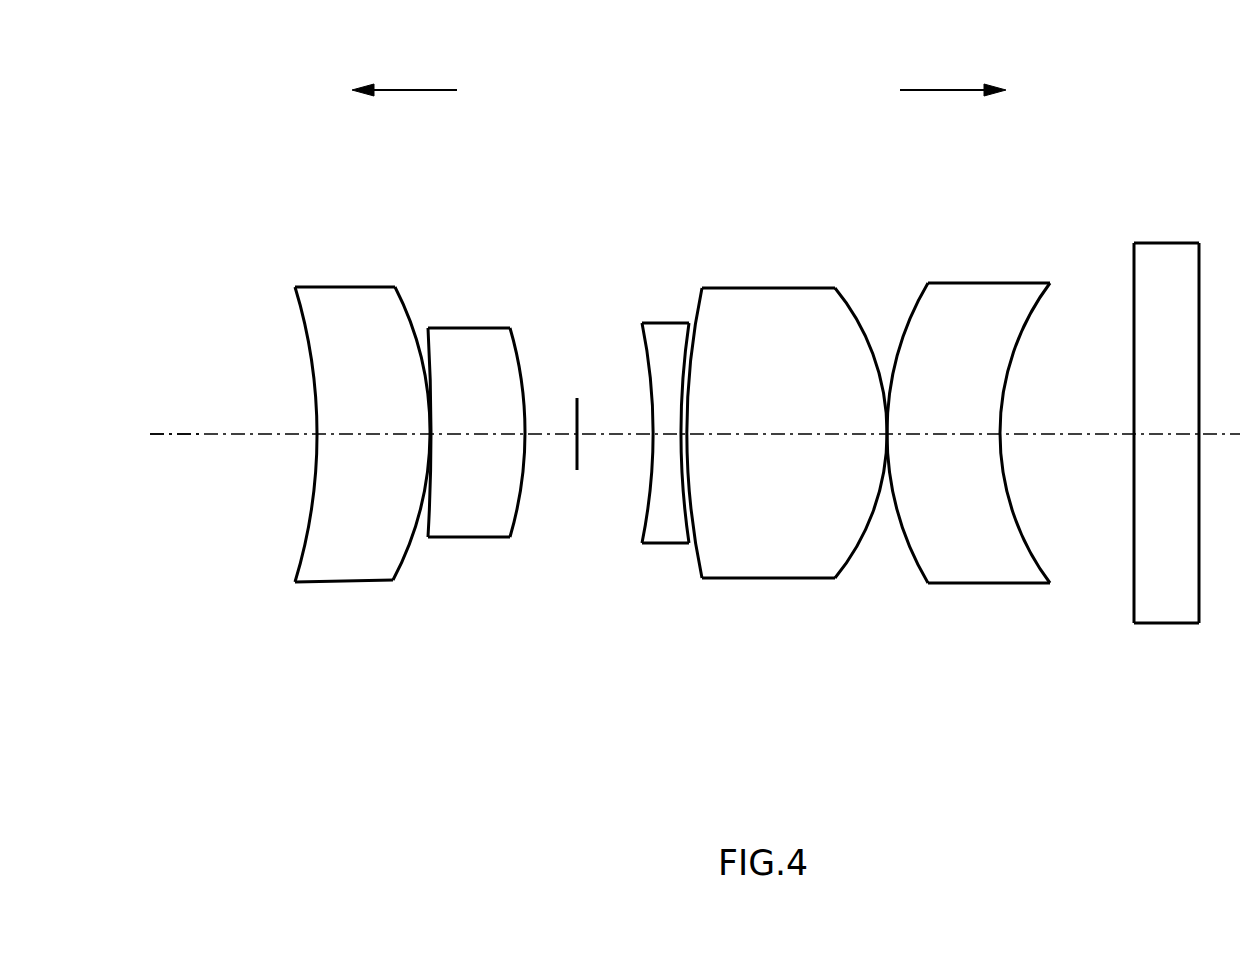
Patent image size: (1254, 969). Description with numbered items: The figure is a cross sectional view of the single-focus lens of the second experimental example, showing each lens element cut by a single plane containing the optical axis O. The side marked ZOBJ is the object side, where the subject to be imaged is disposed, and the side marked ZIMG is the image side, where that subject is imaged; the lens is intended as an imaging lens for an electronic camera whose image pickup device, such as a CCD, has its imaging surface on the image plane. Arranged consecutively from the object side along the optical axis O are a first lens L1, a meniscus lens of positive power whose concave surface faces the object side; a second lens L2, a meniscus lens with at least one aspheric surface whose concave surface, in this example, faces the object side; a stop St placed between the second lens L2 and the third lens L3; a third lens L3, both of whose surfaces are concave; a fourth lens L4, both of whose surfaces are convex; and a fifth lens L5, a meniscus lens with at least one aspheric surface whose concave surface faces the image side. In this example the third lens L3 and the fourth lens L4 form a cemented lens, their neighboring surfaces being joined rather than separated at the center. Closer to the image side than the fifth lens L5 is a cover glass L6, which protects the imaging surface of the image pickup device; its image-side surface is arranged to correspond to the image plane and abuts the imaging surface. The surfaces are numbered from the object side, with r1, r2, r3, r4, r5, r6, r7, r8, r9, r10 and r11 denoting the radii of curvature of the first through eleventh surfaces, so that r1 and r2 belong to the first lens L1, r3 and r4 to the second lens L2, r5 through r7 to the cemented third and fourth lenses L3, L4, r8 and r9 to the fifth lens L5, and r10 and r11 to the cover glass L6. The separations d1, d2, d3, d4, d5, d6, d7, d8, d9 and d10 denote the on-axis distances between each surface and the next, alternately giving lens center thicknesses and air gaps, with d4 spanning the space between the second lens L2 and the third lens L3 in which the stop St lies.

The object side ZOBJ is at (418, 89).
The image side ZIMG is at (950, 89).
The optical axis O is at (170, 434).
The first lens L1 is at (348, 292).
The second lens L2 is at (481, 340).
The third lens L3 is at (669, 334).
The fourth lens L4 is at (773, 296).
The fifth lens L5 is at (984, 292).
The cover glass L6 is at (1168, 252).
The stop St is at (590, 457).
The radius of curvature of the first lens surface r1 is at (297, 550).
The radius of curvature of the second lens surface r2 is at (410, 558).
The radius of curvature of the third lens surface r3 is at (423, 523).
The radius of curvature of the fourth lens surface r4 is at (520, 527).
The radius of curvature of the fifth lens surface r5 is at (645, 512).
The radius of curvature of the sixth lens surface r6 is at (684, 515).
The radius of curvature of the seventh lens surface r7 is at (866, 535).
The radius of curvature of the eighth lens surface r8 is at (903, 540).
The radius of curvature of the ninth lens surface r9 is at (1042, 547).
The radius of curvature of the tenth lens surface r10 is at (1134, 588).
The radius of curvature of the eleventh lens surface r11 is at (1200, 588).
The surface separation between the first and second lens surfaces d1 is at (375, 417).
The surface separation between the second and third lens surfaces d2 is at (430, 433).
The surface separation between the third and fourth lens surfaces d3 is at (483, 417).
The surface separation between the fourth and fifth lens surfaces d4 is at (548, 433).
The surface separation between the fifth and sixth lens surfaces d5 is at (663, 434).
The surface separation between the sixth and seventh lens surfaces d6 is at (741, 433).
The surface separation between the seventh and eighth lens surfaces d7 is at (887, 433).
The surface separation between the eighth and ninth lens surfaces d8 is at (950, 417).
The surface separation between the ninth and tenth lens surfaces d9 is at (1075, 417).
The surface separation between the tenth and eleventh lens surfaces d10 is at (1167, 417).